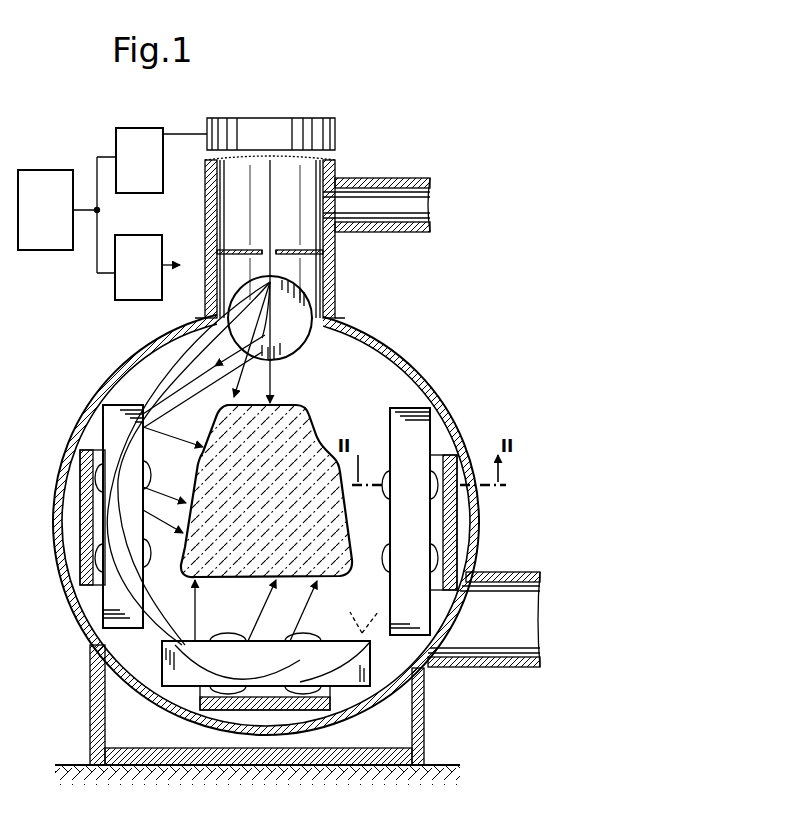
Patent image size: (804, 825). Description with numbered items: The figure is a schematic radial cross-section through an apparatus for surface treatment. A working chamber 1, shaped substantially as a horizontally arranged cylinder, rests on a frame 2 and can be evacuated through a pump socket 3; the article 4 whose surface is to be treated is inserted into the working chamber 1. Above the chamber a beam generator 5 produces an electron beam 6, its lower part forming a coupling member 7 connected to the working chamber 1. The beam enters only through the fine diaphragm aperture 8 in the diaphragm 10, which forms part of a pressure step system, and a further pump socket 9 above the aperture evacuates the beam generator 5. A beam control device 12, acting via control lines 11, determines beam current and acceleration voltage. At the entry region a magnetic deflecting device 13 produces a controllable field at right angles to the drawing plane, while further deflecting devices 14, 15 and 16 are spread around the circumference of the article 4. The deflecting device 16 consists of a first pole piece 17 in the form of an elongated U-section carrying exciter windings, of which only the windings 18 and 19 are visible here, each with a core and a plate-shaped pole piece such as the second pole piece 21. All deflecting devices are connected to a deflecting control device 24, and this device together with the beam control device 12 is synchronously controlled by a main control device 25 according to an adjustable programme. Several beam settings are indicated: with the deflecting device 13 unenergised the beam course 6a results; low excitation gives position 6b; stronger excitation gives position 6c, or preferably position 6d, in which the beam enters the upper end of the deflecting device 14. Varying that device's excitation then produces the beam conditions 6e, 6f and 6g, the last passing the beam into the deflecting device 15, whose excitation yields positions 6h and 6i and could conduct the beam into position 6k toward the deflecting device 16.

The working chamber 1 is at (120, 366).
The frame 2 is at (90, 732).
The pump socket 3 is at (452, 668).
The article 4 is at (316, 418).
The beam generator 5 is at (336, 128).
The electron beam 6 is at (268, 197).
The beam course 6a is at (272, 382).
The beam position 6b is at (240, 383).
The beam position 6c is at (212, 366).
The beam position 6d is at (200, 446).
The beam condition 6e is at (182, 500).
The beam condition 6f is at (178, 530).
The beam condition 6g is at (195, 610).
The beam position 6h is at (262, 608).
The beam position 6i is at (306, 606).
The beam position 6k is at (359, 614).
The coupling member 7 is at (336, 276).
The diaphragm aperture 8 is at (267, 250).
The further pump socket 9 is at (391, 178).
The diaphragm 10 is at (293, 250).
The control lines 11 is at (186, 134).
The beam control device 12 is at (131, 176).
The magnetic deflecting device 13 is at (322, 318).
The further deflecting device 14 is at (100, 436).
The further deflecting device 15 is at (198, 692).
The further deflecting device 16 is at (441, 446).
The first pole piece 17 is at (448, 530).
The exciter winding 18 is at (390, 485).
The exciter winding 19 is at (391, 557).
The second pole piece 21 is at (400, 420).
The deflecting control device 24 is at (129, 283).
The main control device 25 is at (36, 224).